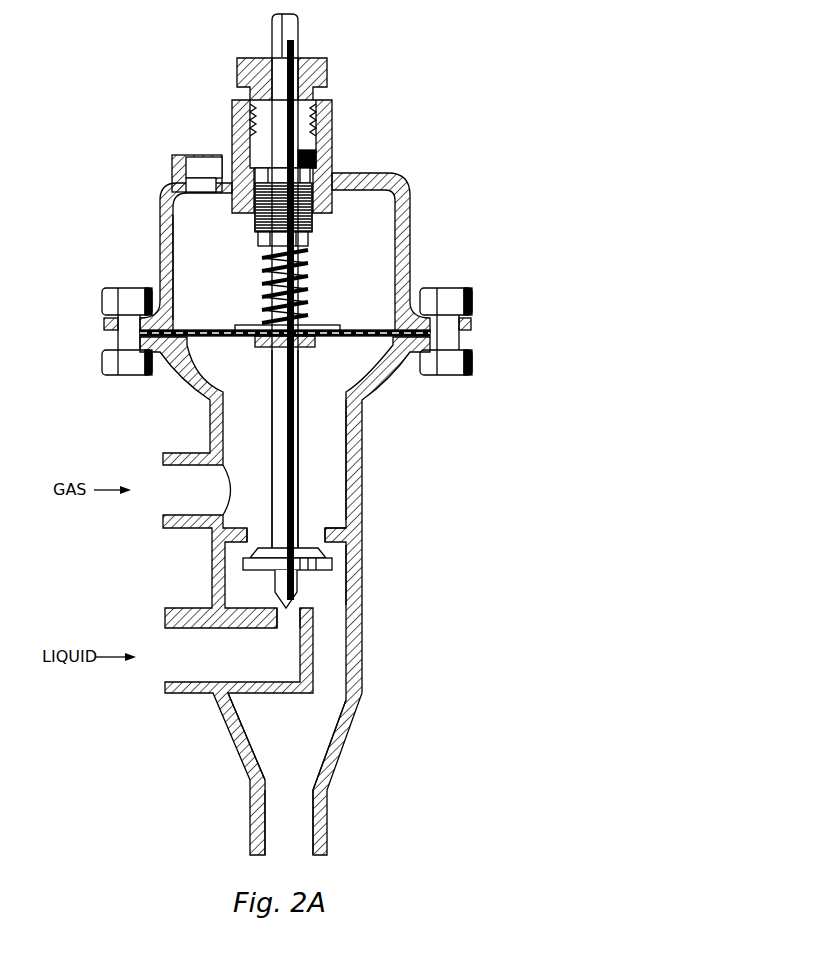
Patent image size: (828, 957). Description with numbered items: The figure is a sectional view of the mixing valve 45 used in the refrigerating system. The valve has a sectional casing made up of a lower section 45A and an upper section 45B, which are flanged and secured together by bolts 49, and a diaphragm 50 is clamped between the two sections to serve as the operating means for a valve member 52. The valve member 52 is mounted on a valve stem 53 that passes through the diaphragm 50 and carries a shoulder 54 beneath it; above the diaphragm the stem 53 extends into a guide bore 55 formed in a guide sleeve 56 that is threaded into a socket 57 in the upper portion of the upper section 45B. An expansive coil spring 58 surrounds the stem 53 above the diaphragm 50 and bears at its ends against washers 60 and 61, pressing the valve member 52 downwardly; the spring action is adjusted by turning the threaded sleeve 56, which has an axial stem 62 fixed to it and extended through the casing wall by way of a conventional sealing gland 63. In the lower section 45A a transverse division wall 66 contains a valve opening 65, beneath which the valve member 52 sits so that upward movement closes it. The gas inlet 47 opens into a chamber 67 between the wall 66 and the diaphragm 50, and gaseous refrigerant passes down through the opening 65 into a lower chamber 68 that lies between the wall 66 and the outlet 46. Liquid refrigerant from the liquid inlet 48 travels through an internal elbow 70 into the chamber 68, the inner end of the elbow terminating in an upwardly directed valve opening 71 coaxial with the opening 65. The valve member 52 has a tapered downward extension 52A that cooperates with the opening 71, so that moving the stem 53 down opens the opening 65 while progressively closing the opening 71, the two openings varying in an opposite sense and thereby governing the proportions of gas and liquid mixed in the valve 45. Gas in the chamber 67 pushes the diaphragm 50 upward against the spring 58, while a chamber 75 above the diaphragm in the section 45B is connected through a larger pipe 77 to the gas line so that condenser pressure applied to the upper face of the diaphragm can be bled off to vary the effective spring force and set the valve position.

The mixing valve 45 is at (272, 611).
The lower casing section 45A is at (362, 578).
The upper casing section 45B is at (410, 228).
The outlet 46 is at (298, 848).
The gas inlet 47 is at (178, 521).
The liquid inlet 48 is at (186, 668).
The bolts 49 is at (116, 325).
The diaphragm 50 is at (340, 330).
The valve member 52 is at (320, 572).
The downward extension 52A is at (278, 582).
The valve stem 53 is at (283, 400).
The shoulder 54 is at (264, 344).
The guide bore 55 is at (258, 222).
The guide sleeve 56 is at (310, 226).
The socket 57 is at (305, 166).
The coil spring 58 is at (305, 291).
The washer 60 is at (252, 326).
The washer 61 is at (308, 240).
The axial stem 62 is at (276, 57).
The sealing gland 63 is at (312, 128).
The valve opening 65 is at (311, 530).
The division wall 66 is at (336, 530).
The chamber 67 is at (324, 425).
The lower chamber 68 is at (335, 702).
The internal elbow 70 is at (274, 694).
The valve opening 71 is at (290, 620).
The chamber 75 is at (185, 238).
The pipe 77 is at (195, 163).